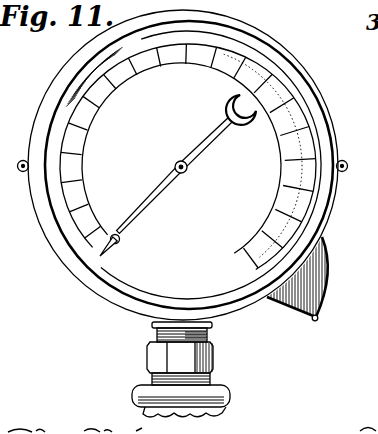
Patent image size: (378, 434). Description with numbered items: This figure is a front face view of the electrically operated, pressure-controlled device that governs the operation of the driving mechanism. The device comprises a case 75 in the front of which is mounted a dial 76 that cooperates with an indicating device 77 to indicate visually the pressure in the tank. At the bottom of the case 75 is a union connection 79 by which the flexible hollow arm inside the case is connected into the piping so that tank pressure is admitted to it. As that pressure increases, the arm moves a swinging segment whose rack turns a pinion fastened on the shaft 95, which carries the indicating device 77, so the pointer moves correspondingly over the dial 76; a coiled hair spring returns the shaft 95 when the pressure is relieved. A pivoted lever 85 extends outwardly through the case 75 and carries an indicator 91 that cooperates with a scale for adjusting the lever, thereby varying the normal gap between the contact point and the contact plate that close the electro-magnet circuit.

The case 75 is at (62, 258).
The dial 76 is at (132, 283).
The indicating device 77 is at (150, 210).
The union connection 79 is at (216, 352).
The pivoted lever 85 is at (318, 316).
The indicator 91 is at (312, 321).
The shaft 95 is at (187, 169).